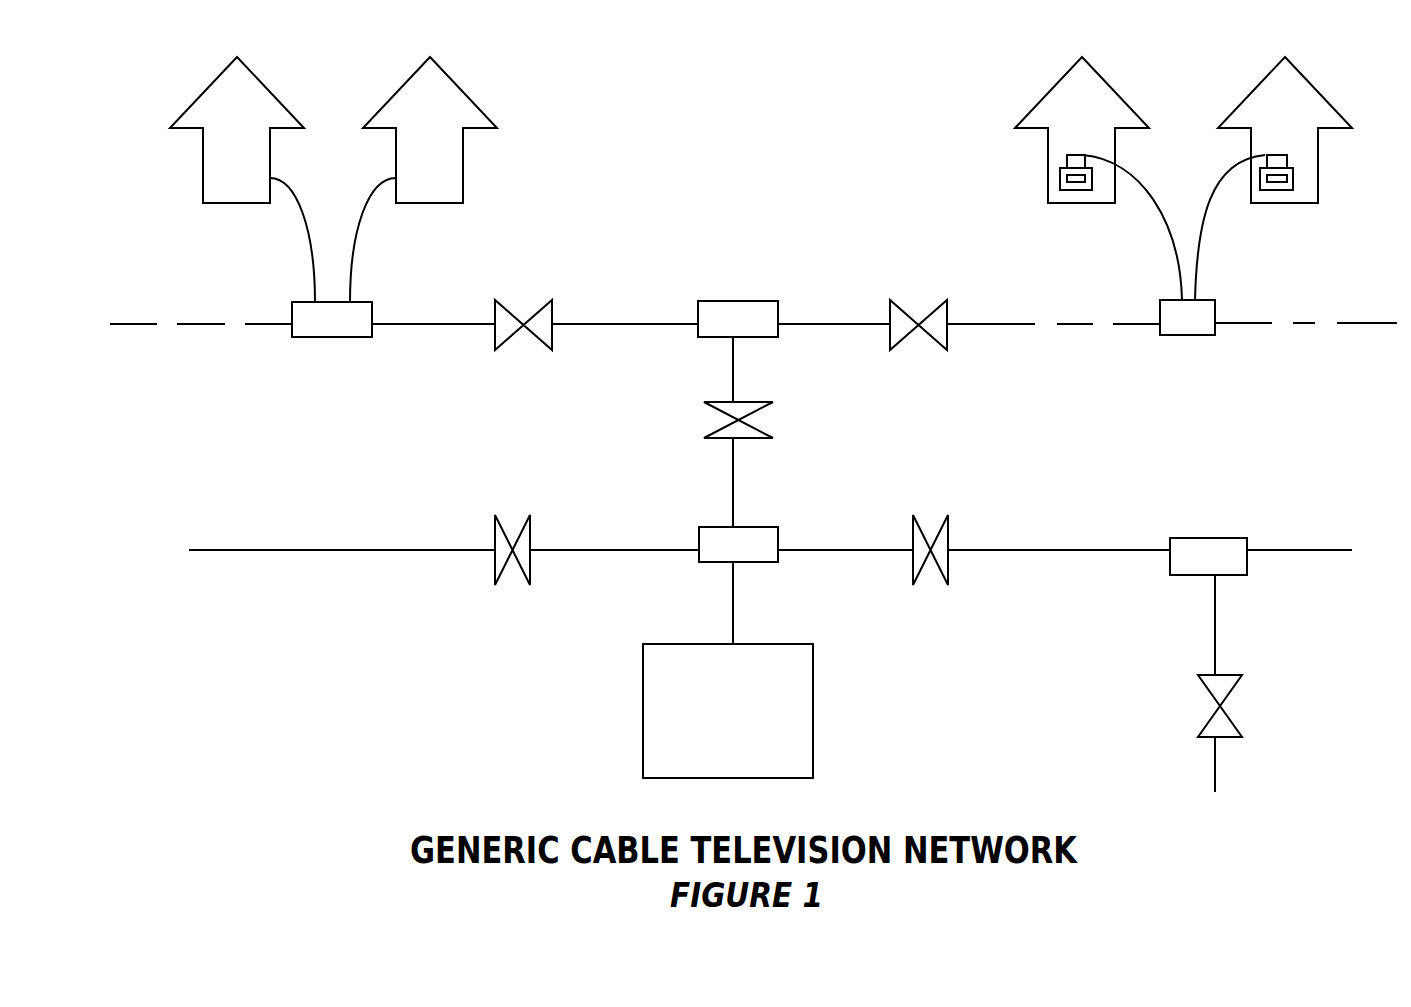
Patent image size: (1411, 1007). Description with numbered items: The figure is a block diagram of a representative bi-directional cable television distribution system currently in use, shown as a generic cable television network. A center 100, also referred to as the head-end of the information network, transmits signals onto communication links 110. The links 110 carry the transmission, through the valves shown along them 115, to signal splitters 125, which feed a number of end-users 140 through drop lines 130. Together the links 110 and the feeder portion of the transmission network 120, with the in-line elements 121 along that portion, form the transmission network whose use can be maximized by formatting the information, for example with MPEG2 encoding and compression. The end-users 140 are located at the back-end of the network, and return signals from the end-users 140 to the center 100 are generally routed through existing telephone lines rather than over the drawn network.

The center 100 is at (828, 765).
The communication links 110 is at (235, 575).
The trunk amplifier 115 is at (482, 523).
The transmission network 120 is at (425, 340).
The line extender amplifier 121 is at (563, 300).
The signal splitters 125 is at (1193, 348).
The drop lines 130 is at (363, 252).
The end-users 140 is at (1083, 138).